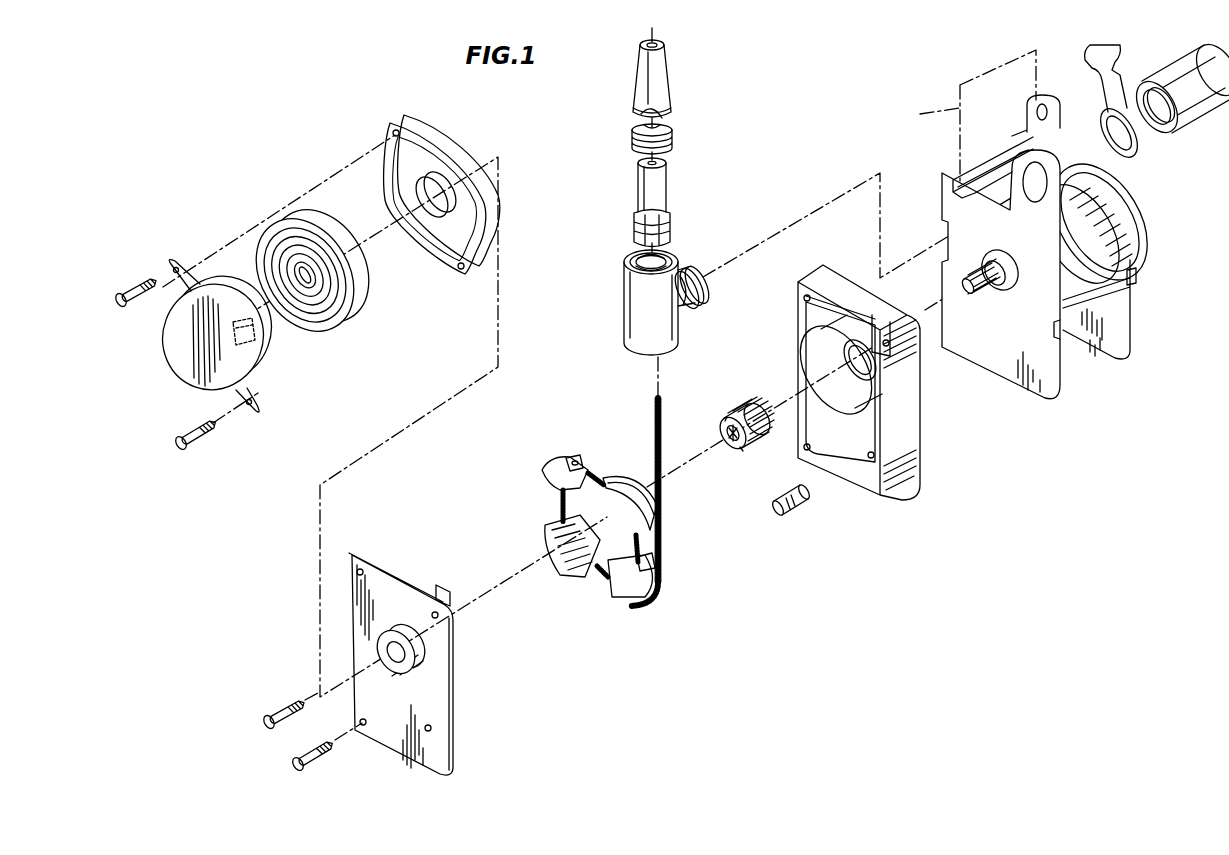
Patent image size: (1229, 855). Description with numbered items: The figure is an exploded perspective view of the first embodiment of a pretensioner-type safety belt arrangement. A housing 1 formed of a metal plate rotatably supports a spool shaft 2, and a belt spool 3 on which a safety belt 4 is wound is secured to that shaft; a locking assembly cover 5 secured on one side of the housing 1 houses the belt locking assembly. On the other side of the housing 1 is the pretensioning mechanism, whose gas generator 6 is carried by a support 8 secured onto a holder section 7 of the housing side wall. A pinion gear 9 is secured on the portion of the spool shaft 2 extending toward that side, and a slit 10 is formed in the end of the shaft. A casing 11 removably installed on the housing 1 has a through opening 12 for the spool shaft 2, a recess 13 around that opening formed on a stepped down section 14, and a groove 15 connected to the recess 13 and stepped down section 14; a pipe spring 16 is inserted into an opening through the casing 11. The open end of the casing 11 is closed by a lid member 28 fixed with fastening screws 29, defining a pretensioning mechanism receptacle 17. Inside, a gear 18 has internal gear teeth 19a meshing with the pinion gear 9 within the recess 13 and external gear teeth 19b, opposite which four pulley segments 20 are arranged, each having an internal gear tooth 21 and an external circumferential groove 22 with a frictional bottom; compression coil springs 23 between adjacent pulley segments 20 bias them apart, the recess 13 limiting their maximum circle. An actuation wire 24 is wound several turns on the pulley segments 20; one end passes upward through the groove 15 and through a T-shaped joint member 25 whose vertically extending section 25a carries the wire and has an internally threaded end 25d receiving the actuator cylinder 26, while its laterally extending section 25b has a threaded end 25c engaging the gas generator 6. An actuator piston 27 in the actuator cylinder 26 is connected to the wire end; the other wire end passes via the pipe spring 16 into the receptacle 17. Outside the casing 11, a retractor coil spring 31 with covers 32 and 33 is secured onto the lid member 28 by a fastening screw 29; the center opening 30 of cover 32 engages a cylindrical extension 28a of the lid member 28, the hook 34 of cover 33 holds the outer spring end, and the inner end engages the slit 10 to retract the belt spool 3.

The housing 1 is at (994, 256).
The spool shaft 2 is at (970, 262).
The belt spool 3 is at (1095, 218).
The safety belt 4 is at (904, 120).
The locking assembly cover 5 is at (1138, 258).
The gas generator 6 is at (1172, 128).
The holder section 7 is at (1010, 150).
The support 8 is at (1140, 160).
The pinion gear 9 is at (998, 280).
The slit 10 is at (969, 295).
The casing 11 is at (854, 382).
The through opening 12 is at (880, 365).
The recess 13 is at (818, 350).
The stepped down section 14 is at (833, 460).
The groove 15 is at (880, 317).
The pipe spring 16 is at (805, 506).
The pretensioning mechanism receptacle 17 is at (762, 312).
The gear 18 is at (743, 430).
The internal gear teeth 19a is at (724, 420).
The external gear teeth 19b is at (755, 410).
The pulley segments 20 is at (556, 470).
The internal gear tooth 21 is at (605, 520).
The groove 22 is at (663, 540).
The compression coil springs 23 is at (560, 505).
The actuation wire 24 is at (661, 598).
The joint member 25 is at (661, 286).
The vertically extending section 25a is at (655, 325).
The laterally extending section 25b is at (690, 298).
The threaded end 25c is at (707, 285).
The internally threaded end 25d is at (632, 252).
The actuator cylinder 26 is at (672, 113).
The actuator piston 27 is at (666, 190).
The lid member 28 is at (437, 664).
The cylindrical extension 28a is at (418, 644).
The fastening screws 29 is at (140, 290).
The center opening 30 is at (430, 198).
The retractor coil spring 31 is at (300, 215).
The cover 32 is at (400, 125).
The cover 33 is at (234, 341).
The hook 34 is at (260, 348).